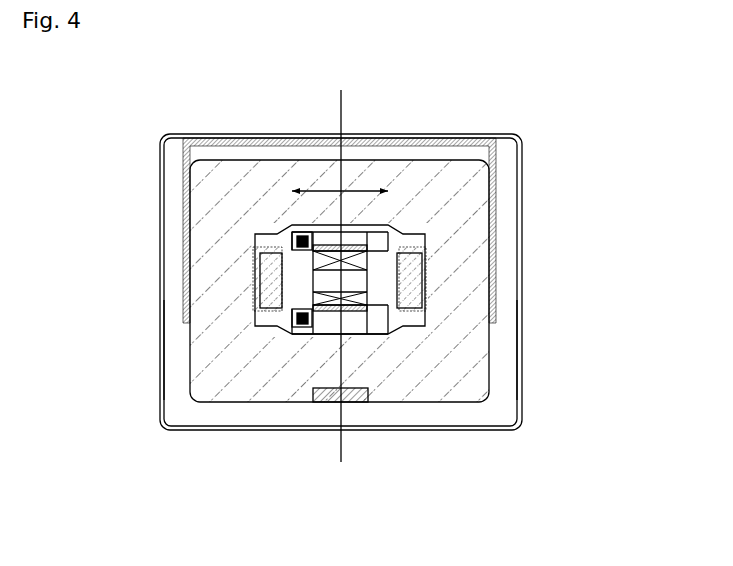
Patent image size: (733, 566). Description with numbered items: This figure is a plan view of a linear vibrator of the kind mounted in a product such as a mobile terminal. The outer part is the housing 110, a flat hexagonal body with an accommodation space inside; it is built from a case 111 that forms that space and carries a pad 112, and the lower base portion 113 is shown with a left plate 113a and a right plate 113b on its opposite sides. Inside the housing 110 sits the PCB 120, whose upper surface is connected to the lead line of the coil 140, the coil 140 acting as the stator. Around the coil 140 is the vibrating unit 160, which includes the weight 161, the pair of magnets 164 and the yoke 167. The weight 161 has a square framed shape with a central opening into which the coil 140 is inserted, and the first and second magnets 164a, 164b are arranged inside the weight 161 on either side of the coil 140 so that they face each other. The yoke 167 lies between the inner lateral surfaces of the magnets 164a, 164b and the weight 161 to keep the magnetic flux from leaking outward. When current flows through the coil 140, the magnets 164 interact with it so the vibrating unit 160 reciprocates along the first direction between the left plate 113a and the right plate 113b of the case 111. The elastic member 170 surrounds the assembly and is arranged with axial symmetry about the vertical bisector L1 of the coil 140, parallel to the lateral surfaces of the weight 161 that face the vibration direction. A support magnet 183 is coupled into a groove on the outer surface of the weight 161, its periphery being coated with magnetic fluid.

The housing 110 is at (331, 349).
The case 111 is at (341, 320).
The pad 112 is at (178, 407).
The base 113 is at (341, 311).
The left plate 113a is at (157, 343).
The right plate 113b is at (520, 392).
The PCB 120 is at (377, 250).
The coil 140 is at (377, 297).
The vibrating unit 160 is at (368, 281).
The weight 161 is at (468, 312).
The pair of magnets 164 is at (344, 260).
The first magnet 164a is at (255, 282).
The second magnet 164b is at (426, 276).
The yoke 167 is at (430, 233).
The elastic member 170 is at (283, 137).
The support magnet 183 is at (327, 402).
The vertical bisector L1 is at (341, 277).